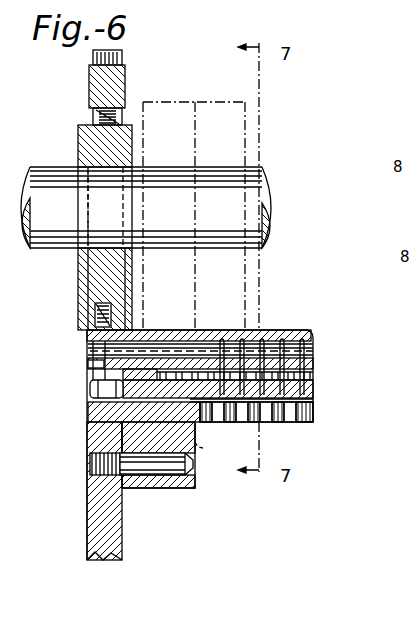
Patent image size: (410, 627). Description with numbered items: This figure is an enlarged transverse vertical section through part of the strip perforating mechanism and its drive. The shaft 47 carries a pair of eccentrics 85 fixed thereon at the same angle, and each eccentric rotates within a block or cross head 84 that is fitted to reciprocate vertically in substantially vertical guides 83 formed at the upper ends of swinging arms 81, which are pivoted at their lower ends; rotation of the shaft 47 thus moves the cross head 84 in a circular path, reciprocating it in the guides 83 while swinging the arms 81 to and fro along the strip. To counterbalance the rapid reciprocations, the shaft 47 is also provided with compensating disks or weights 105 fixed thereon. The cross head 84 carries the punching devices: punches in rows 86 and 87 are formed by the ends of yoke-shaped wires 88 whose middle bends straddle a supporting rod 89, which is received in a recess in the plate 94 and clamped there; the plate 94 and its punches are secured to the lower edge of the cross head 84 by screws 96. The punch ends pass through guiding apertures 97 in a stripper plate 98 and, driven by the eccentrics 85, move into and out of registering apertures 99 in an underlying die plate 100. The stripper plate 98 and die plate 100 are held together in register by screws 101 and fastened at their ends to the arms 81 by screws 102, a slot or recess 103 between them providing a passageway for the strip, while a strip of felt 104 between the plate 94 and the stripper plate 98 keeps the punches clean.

The shaft 47 is at (268, 200).
The arms 81 is at (92, 494).
The guides 83 is at (92, 113).
The block or cross head 84 is at (78, 146).
The eccentrics 85 is at (86, 207).
The row of punches 86 is at (210, 330).
The row of punches 87 is at (241, 337).
The yoke-shaped wires or members 88 is at (281, 338).
The supporting rod 89 is at (142, 345).
The plate 94 is at (88, 363).
The screws 96 is at (94, 318).
The guiding apertures 97 is at (313, 400).
The stripper plate 98 is at (313, 386).
The registering apertures 99 is at (250, 423).
The die plate 100 is at (280, 423).
The screws 101 is at (216, 444).
The screws 102 is at (90, 392).
The slot or recess 103 is at (313, 410).
The strip of felt 104 is at (314, 378).
The compensating disks or weights 105 is at (210, 100).